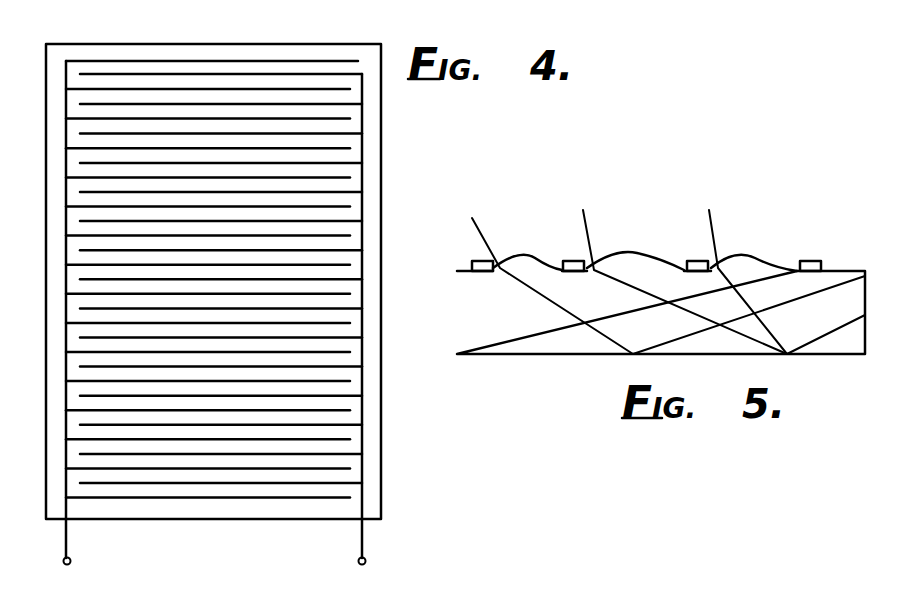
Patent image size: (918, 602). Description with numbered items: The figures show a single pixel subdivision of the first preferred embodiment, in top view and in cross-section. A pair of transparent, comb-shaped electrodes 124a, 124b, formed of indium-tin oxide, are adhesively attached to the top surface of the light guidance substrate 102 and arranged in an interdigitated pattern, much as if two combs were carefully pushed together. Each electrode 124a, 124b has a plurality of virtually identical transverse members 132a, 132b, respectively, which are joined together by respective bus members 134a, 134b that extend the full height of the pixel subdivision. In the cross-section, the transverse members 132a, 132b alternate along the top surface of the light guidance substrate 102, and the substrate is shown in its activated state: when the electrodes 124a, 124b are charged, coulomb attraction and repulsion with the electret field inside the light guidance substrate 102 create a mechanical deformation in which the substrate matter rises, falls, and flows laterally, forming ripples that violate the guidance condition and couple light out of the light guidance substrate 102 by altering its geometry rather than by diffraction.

In FIG. 5, the light guidance substrate 102 is at (508, 348).
In FIG. 4, the transparent electrode 124a is at (70, 558).
In FIG. 4, the transparent electrode 124b is at (363, 540).
In FIG. 4, the transverse members 132a is at (83, 115).
In FIG. 5, the transverse members 132a is at (480, 261).
In FIG. 4, the transverse members 132b is at (345, 78).
In FIG. 5, the transverse members 132b is at (576, 261).
In FIG. 4, the bus member 134a is at (67, 487).
In FIG. 4, the bus member 134b is at (345, 480).